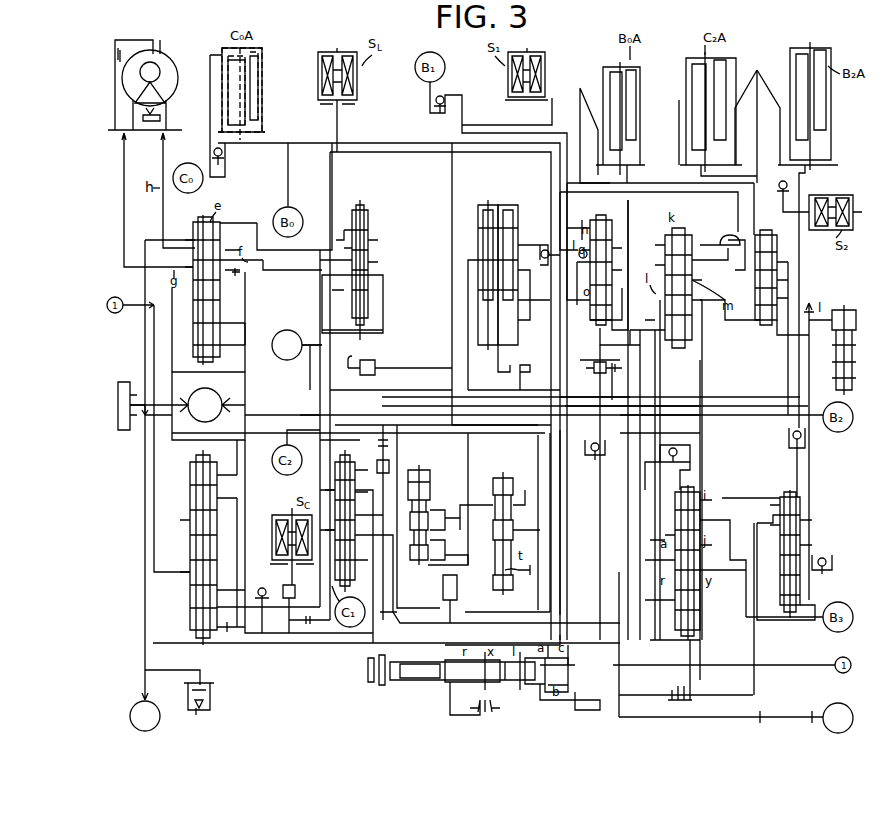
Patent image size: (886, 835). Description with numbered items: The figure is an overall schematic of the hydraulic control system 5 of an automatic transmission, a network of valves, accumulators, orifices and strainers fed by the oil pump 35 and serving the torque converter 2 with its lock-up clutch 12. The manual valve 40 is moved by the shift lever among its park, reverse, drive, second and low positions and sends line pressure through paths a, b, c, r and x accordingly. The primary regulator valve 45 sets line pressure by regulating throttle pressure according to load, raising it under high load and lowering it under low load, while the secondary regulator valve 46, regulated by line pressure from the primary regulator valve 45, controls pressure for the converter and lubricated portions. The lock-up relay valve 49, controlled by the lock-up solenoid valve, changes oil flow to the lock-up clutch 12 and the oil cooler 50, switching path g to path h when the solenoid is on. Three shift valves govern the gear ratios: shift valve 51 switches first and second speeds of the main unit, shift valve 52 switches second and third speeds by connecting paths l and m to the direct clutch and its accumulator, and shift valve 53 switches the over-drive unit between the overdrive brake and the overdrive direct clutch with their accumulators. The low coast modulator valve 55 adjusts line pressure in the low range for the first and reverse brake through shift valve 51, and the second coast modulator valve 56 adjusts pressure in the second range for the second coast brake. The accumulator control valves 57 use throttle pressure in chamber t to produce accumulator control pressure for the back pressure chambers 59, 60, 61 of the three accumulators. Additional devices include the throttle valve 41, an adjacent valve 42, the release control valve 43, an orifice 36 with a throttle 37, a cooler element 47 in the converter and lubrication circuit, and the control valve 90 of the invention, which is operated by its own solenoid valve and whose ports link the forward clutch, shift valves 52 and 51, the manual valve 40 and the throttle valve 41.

The torque converter 2 is at (173, 58).
The hydraulic control system 5 is at (73, 118).
The lock-up clutch 12 is at (115, 58).
The oil pump 35 is at (214, 398).
The orifice 36 is at (364, 358).
The throttle 37 is at (121, 444).
The manual valve 40 is at (425, 688).
The throttle valve 41 is at (496, 210).
The valve 42 is at (520, 222).
The release control valve 43 is at (804, 518).
The primary regulator valve 45 is at (184, 502).
The secondary regulator valve 46 is at (372, 228).
The oil cooler 47 is at (290, 332).
The lock-up relay valve 49 is at (226, 222).
The oil cooler 50 is at (133, 708).
The shift valve 51 is at (664, 512).
The shift valve 52 is at (664, 246).
The shift valve 53 is at (616, 212).
The low coast modulator valve 55 is at (854, 314).
The second coast modulator valve 56 is at (766, 232).
The accumulator control valve 57 is at (514, 462).
The back pressure chamber 59 is at (598, 132).
The back pressure chamber 60 is at (745, 126).
The back pressure chamber 61 is at (768, 117).
The control valve 90 is at (352, 472).